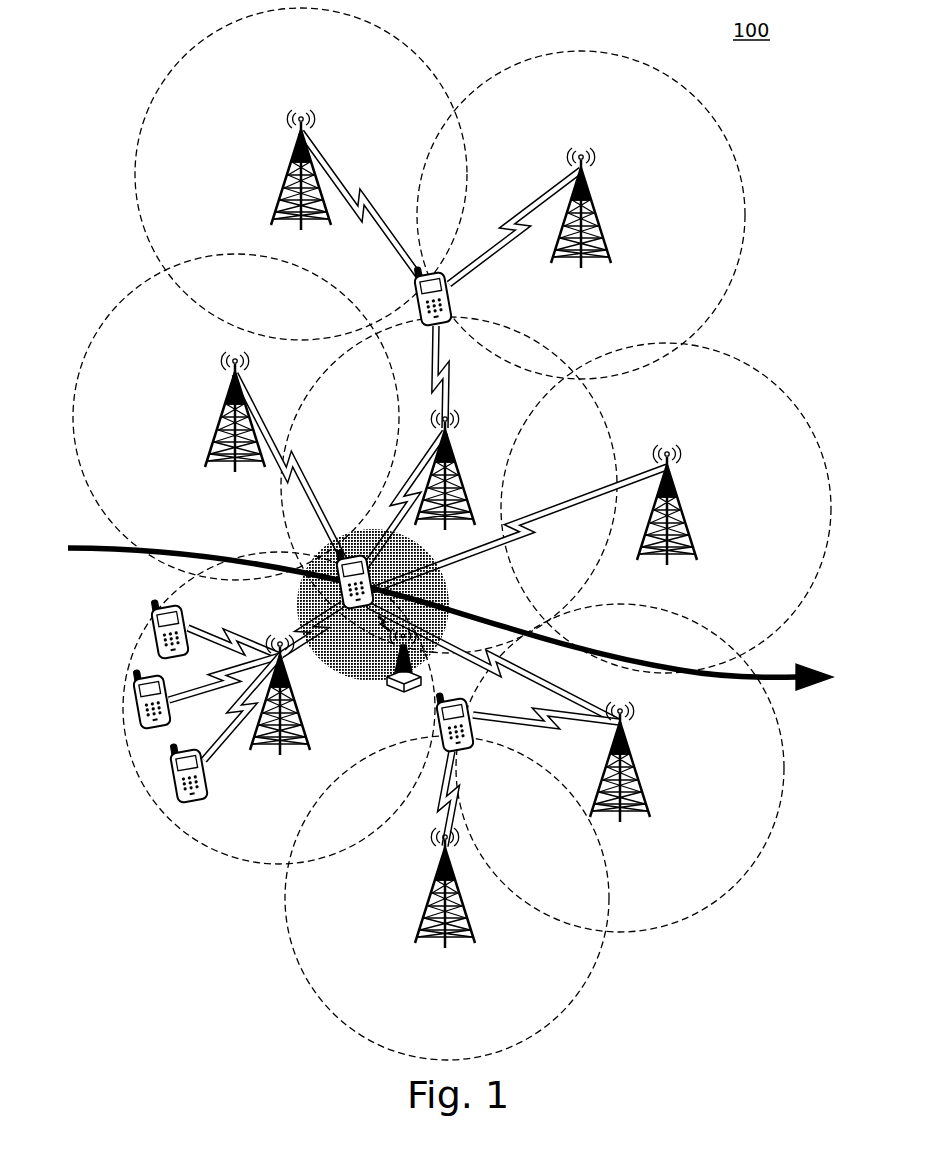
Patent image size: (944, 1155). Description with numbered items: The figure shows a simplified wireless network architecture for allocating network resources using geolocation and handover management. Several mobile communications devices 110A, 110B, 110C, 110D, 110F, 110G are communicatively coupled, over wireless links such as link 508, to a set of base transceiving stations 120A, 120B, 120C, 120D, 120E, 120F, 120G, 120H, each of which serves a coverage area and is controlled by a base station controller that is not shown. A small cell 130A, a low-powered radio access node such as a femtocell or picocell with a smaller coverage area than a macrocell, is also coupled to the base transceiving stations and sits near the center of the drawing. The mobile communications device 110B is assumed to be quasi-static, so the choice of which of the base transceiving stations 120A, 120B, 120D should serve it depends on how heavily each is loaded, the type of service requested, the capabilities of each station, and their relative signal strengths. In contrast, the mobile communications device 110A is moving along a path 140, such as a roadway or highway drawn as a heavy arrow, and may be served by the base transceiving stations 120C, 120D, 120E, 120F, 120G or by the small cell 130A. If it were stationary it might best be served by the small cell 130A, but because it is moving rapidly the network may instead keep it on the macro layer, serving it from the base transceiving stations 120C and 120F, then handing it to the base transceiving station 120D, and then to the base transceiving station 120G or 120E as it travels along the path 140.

The mobile communications device 110A is at (330, 562).
The mobile communications device 110B is at (452, 297).
The mobile communications device 110C is at (153, 632).
The mobile communications device 110D is at (135, 704).
The mobile communications device 110F is at (175, 763).
The mobile communications device 110G is at (470, 748).
The Base Transceiving Station 120A is at (293, 178).
The Base Transceiving Station 120B is at (589, 220).
The Base Transceiving Station 120C is at (227, 424).
The Base Transceiving Station 120D is at (457, 479).
The Base Transceiving Station 120E is at (677, 516).
The Base Transceiving Station 120F is at (295, 698).
The Base Transceiving Station 120G is at (633, 766).
The Base Transceiving Station 120H is at (433, 897).
The small cell 130A is at (433, 648).
The path 140 is at (647, 658).
The communication link 508 is at (385, 262).